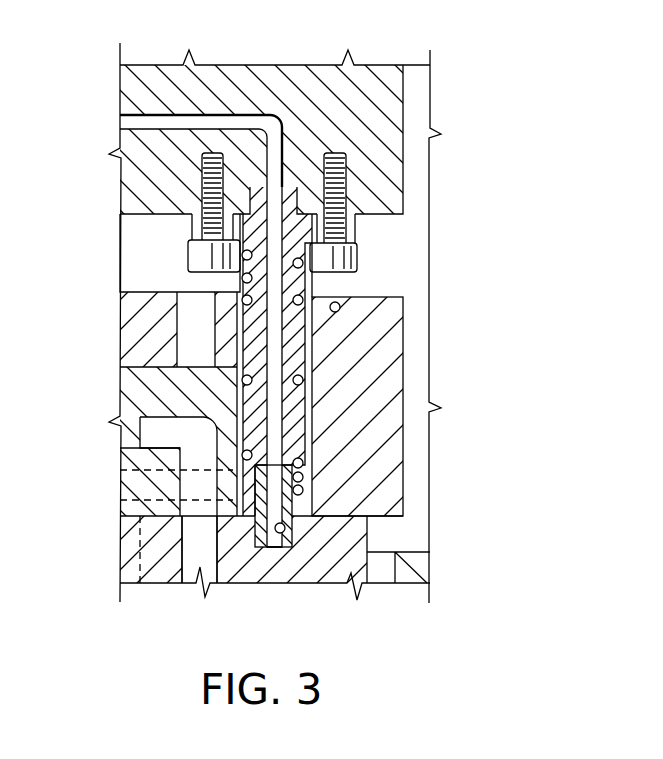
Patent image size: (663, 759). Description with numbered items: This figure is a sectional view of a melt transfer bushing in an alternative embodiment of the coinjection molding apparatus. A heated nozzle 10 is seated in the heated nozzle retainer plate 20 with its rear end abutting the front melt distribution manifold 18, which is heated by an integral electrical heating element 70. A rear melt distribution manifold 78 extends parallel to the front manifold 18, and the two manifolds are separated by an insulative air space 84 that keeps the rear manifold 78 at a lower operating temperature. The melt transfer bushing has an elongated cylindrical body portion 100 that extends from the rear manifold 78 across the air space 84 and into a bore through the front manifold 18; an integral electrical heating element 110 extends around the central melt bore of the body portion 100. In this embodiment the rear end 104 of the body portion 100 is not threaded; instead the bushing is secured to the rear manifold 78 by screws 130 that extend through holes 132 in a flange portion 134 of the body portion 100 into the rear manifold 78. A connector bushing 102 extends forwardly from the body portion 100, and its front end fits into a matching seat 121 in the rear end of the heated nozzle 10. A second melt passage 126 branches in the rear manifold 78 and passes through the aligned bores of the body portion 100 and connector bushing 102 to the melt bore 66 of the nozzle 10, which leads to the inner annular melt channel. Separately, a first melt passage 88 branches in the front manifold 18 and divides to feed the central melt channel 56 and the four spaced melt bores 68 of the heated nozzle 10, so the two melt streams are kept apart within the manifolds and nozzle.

The rear melt distribution manifold 78 is at (140, 92).
The second melt passage 126 is at (133, 121).
The rear end 104 is at (283, 183).
The insulative air space 84 is at (140, 250).
The front melt distribution manifold 18 is at (140, 331).
The first melt passage 88 is at (155, 434).
The spaced melt bores 68 is at (128, 545).
The heated nozzle 10 is at (157, 570).
The central melt channel 56 is at (211, 570).
The melt bore 66 is at (273, 570).
The holes 132 is at (352, 210).
The flange portion 134 is at (357, 226).
The screws 130 is at (357, 257).
The integral electrical heating element 70 is at (340, 309).
The elongated cylindrical body portion 100 is at (293, 330).
The integral electrical heating element 110 is at (303, 387).
The connector bushing 102 is at (403, 505).
The matching seat 121 is at (290, 541).
The heated nozzle retainer plate 20 is at (422, 568).